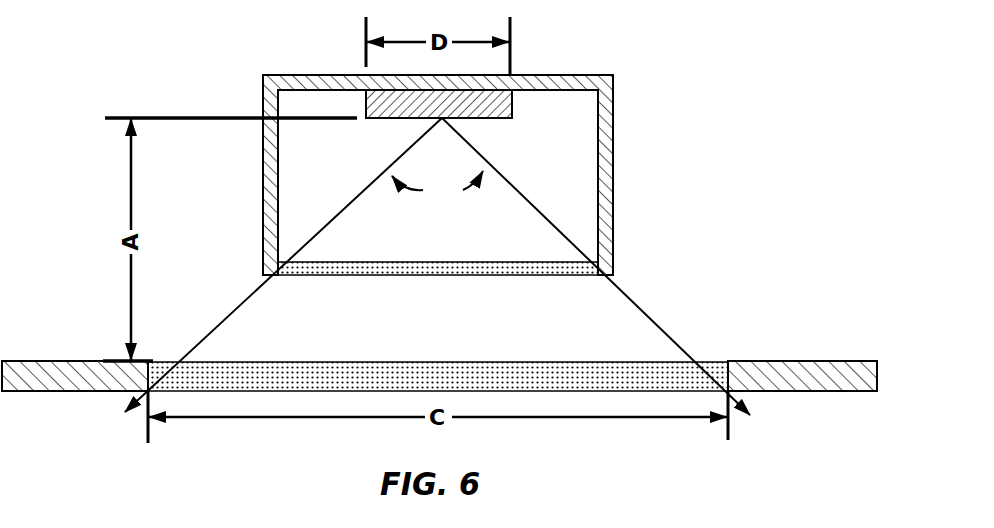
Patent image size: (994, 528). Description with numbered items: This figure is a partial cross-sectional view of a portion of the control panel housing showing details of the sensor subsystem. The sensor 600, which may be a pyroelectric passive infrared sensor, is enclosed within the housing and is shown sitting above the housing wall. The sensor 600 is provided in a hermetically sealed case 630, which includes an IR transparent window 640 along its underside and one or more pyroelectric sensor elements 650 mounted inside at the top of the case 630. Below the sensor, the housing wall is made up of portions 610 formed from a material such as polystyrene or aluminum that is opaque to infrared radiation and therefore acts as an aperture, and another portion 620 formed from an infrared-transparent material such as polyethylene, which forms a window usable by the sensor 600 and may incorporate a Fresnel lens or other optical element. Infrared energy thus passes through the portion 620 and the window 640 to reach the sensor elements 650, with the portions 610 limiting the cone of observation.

The sensor 600 is at (437, 238).
The portions of housing 610 is at (110, 390).
The portion of housing 620 is at (442, 362).
The hermetically sealed case 630 is at (615, 175).
The IR transparent window 640 is at (510, 275).
The pyroelectric sensor elements 650 is at (385, 120).